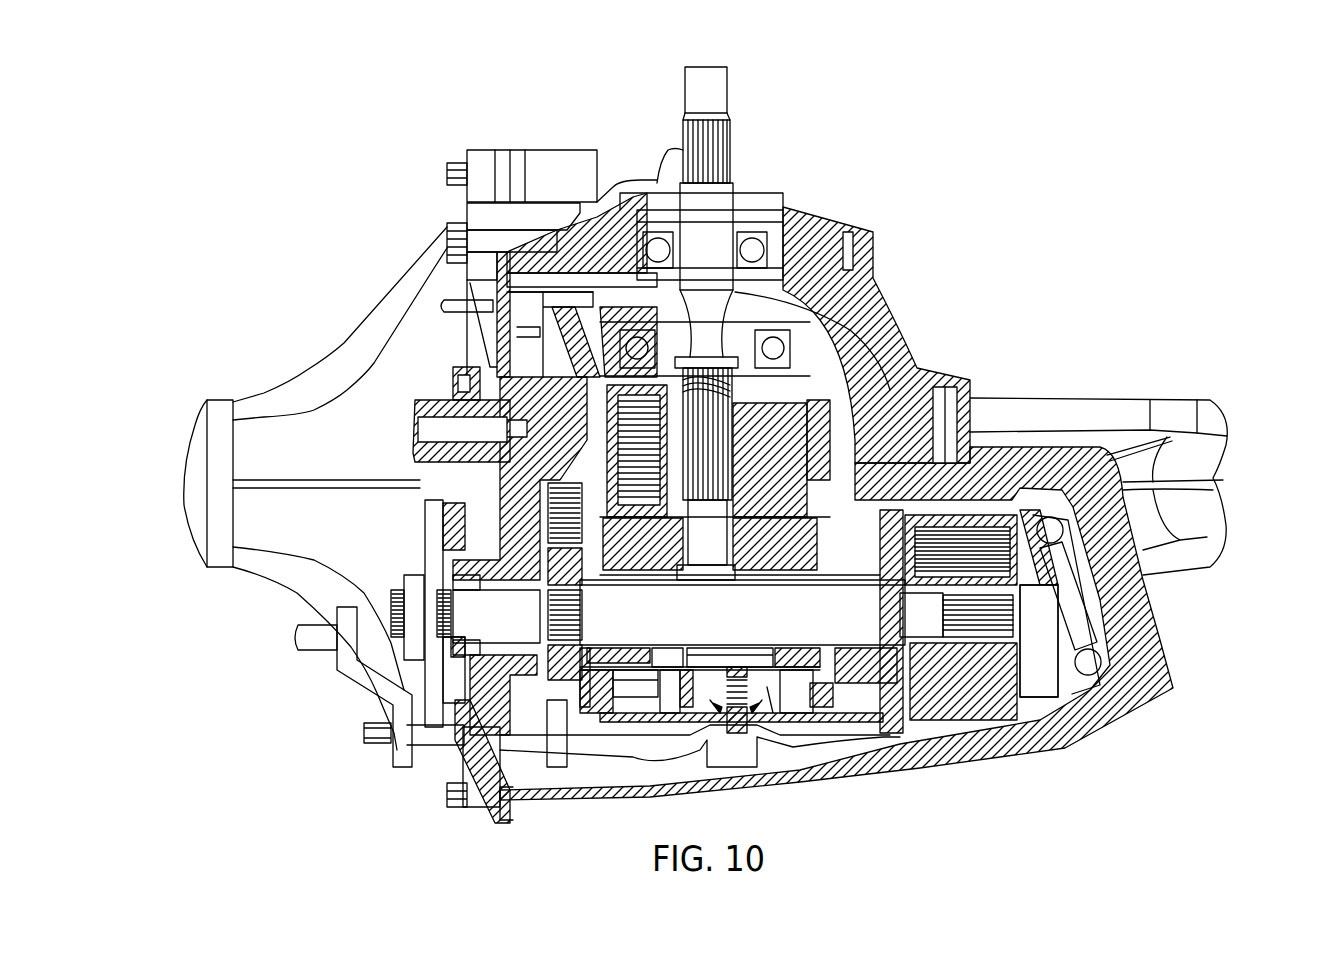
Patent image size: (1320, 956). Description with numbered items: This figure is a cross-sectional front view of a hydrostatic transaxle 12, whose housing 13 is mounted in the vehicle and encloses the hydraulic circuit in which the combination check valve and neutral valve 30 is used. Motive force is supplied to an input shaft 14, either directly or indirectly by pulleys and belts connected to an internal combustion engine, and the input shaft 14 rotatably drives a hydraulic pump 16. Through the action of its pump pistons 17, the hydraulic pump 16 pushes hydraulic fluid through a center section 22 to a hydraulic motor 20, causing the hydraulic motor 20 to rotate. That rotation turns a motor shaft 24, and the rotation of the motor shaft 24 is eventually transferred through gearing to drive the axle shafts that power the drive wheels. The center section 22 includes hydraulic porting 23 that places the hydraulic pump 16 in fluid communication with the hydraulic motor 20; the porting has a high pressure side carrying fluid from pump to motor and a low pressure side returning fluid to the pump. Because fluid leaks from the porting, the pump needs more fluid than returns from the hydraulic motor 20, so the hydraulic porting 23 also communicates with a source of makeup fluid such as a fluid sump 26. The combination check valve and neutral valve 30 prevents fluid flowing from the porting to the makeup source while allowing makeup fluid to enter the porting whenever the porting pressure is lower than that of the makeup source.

The hydrostatic transaxle 12 is at (958, 155).
The housing 13 is at (344, 346).
The input shaft 14 is at (728, 92).
The hydraulic pump 16 is at (800, 390).
The pump pistons 17 is at (447, 405).
The hydraulic motor 20 is at (1028, 702).
The center section 22 is at (893, 503).
The hydraulic porting 23 is at (767, 542).
The motor shaft 24 is at (808, 629).
The fluid sump 26 is at (603, 773).
The combination check valve and neutral valve 30 is at (757, 693).